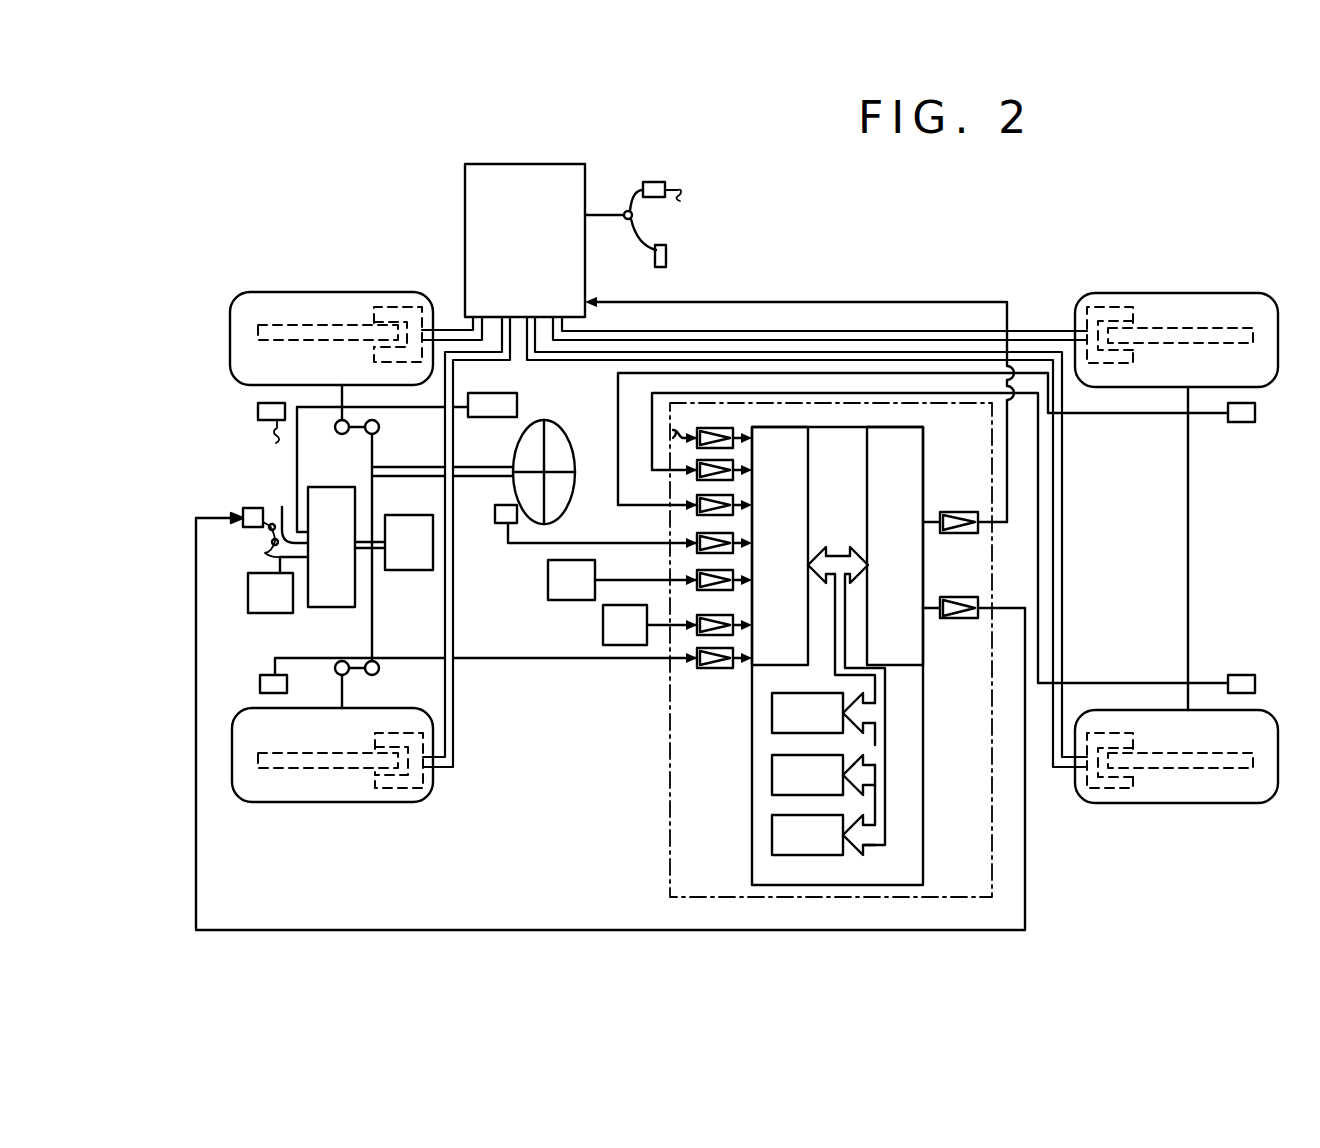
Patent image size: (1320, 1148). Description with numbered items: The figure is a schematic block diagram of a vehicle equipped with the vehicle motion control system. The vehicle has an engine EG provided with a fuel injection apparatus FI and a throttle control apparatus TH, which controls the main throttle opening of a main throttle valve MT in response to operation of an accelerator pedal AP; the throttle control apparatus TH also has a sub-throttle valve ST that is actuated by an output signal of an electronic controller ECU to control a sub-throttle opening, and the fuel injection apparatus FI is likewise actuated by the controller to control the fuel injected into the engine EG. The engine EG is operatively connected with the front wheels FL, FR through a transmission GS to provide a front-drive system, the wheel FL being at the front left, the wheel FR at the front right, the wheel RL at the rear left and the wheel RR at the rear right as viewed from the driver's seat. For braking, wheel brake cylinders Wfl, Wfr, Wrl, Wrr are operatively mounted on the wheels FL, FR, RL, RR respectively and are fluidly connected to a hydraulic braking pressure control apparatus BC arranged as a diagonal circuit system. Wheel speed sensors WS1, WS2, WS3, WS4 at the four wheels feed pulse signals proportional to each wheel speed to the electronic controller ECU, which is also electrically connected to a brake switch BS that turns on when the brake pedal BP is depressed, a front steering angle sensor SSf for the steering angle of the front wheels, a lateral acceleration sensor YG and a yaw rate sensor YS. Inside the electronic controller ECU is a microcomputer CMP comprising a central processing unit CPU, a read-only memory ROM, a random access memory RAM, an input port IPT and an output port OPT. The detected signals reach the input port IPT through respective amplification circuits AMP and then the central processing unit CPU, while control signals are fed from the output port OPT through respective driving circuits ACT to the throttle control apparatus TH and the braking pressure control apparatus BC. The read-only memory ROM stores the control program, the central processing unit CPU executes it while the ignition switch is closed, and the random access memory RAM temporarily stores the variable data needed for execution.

The hydraulic braking pressure control apparatus BC is at (411, 208).
The brake switch BS is at (655, 182).
The brake pedal BP is at (640, 241).
The front right wheel FR is at (265, 292).
The front left wheel FL is at (265, 802).
The rear right wheel RR is at (1195, 293).
The rear left wheel RL is at (1200, 803).
The wheel brake cylinder Wfr is at (401, 306).
The wheel brake cylinder Wfl is at (412, 803).
The wheel brake cylinder Wrr is at (1092, 303).
The wheel brake cylinder Wrl is at (1100, 775).
The wheel speed sensor WS1 is at (260, 683).
The wheel speed sensor WS2 is at (258, 411).
The wheel speed sensor WS3 is at (1245, 675).
The wheel speed sensor WS4 is at (1238, 422).
The accelerator pedal AP is at (517, 397).
The front steering angle sensor SSf is at (500, 523).
The sub-throttle valve ST is at (245, 508).
The throttle control apparatus TH is at (280, 505).
The main throttle valve MT is at (265, 532).
The fuel injection apparatus FI is at (278, 585).
The engine EG is at (342, 487).
The transmission GS is at (394, 542).
The yaw rate sensor YS is at (622, 580).
The lateral acceleration sensor YG is at (650, 625).
The electronic controller ECU is at (665, 707).
The amplification circuit AMP is at (703, 668).
The microcomputer CMP is at (923, 813).
The input port IPT is at (800, 464).
The output port OPT is at (918, 464).
The central processing unit CPU is at (823, 713).
The read-only memory ROM is at (823, 775).
The random access memory RAM is at (823, 835).
The driving circuit ACT is at (958, 500).